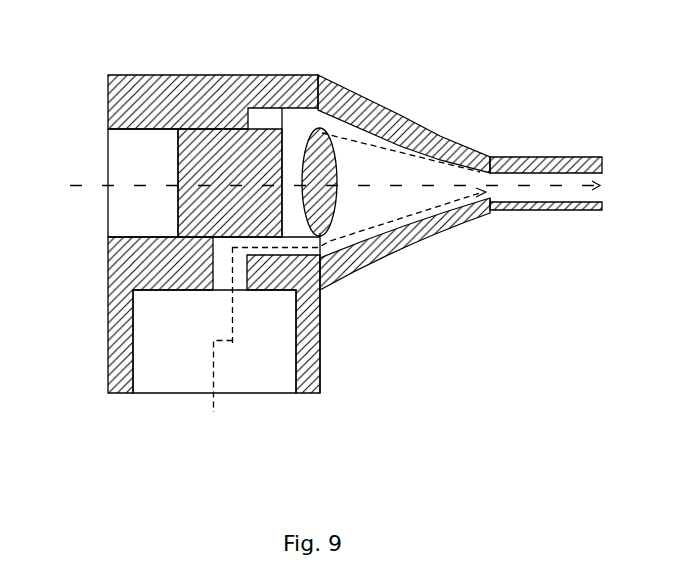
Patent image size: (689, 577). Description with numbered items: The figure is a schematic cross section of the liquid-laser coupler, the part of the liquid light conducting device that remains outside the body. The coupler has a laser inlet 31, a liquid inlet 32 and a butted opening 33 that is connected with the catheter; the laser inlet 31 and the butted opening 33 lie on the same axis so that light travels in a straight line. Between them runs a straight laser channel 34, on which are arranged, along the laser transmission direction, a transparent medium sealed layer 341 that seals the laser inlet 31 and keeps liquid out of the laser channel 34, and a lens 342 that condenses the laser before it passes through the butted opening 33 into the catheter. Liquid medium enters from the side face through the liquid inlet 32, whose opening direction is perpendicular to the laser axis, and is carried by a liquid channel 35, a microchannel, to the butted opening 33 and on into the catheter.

The laser inlet 31 is at (123, 160).
The liquid inlet 32 is at (172, 347).
The butted opening 33 is at (510, 192).
The laser channel 34 is at (497, 108).
The transparent medium sealed layer 341 is at (245, 163).
The lens 342 is at (333, 163).
The liquid channel 35 is at (392, 242).